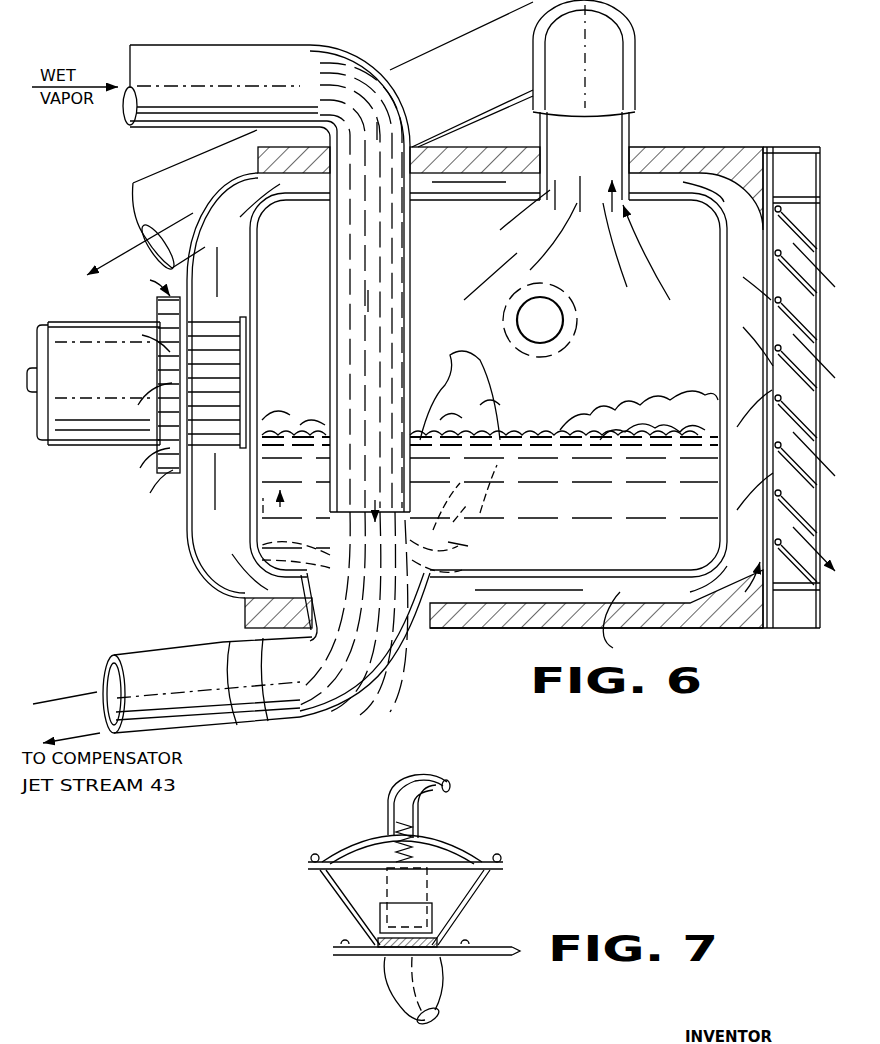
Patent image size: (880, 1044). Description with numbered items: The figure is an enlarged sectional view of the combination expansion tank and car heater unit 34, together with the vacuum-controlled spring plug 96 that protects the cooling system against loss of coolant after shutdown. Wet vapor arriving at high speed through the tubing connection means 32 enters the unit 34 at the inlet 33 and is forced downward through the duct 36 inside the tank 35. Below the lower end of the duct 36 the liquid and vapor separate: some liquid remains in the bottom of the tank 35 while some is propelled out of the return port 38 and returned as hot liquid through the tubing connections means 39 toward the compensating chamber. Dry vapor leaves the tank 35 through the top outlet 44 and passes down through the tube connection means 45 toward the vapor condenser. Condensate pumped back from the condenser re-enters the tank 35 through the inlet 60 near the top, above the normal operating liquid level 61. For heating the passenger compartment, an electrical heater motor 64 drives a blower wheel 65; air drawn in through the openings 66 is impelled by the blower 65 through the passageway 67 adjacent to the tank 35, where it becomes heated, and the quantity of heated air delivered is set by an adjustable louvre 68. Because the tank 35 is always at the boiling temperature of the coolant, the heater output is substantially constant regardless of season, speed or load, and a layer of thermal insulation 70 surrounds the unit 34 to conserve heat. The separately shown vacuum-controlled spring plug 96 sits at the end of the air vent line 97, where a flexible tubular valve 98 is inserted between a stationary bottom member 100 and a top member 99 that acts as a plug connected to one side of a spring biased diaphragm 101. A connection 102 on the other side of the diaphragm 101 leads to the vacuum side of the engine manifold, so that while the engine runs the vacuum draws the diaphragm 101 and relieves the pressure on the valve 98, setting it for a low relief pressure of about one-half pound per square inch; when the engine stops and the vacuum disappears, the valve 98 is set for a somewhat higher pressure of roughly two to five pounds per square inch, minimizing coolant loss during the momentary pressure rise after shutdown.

In FIG. 6, the tubing connection means 32 is at (167, 52).
In FIG. 6, the tube connection means 45 is at (462, 43).
In FIG. 6, the inlet 33 is at (414, 133).
In FIG. 6, the passageway 67 is at (518, 182).
In FIG. 6, the top outlet 44 is at (636, 143).
In FIG. 6, the combination expansion tank and car heater unit 34 is at (115, 233).
In FIG. 6, the tank 35 is at (257, 265).
In FIG. 6, the duct 36 is at (410, 268).
In FIG. 6, the inlet 60 is at (563, 316).
In FIG. 6, the normal operating liquid level 61 is at (521, 435).
In FIG. 6, the electrical heater motor 64 is at (90, 326).
In FIG. 6, the openings 66 is at (168, 330).
In FIG. 6, the blower wheel 65 is at (224, 353).
In FIG. 6, the adjustable louvre 68 is at (806, 313).
In FIG. 6, the return port 38 is at (414, 638).
In FIG. 6, the thermal insulation 70 is at (565, 620).
In FIG. 6, the tubing connections means 39 is at (226, 726).
In FIG. 7, the connection 102 is at (418, 780).
In FIG. 7, the vacuum-controlled spring plug 96 is at (452, 816).
In FIG. 7, the spring biased diaphragm 101 is at (455, 863).
In FIG. 7, the top member 99 is at (432, 915).
In FIG. 7, the flexible tubular valve 98 is at (445, 940).
In FIG. 7, the bottom member 100 is at (440, 957).
In FIG. 7, the air vent line 97 is at (445, 990).